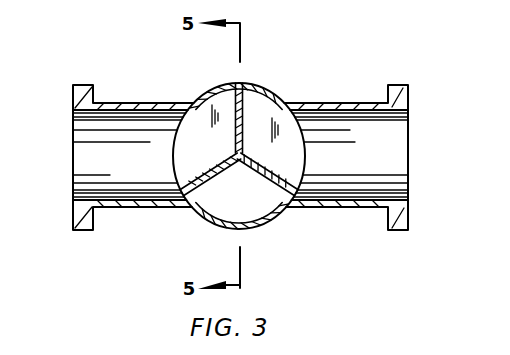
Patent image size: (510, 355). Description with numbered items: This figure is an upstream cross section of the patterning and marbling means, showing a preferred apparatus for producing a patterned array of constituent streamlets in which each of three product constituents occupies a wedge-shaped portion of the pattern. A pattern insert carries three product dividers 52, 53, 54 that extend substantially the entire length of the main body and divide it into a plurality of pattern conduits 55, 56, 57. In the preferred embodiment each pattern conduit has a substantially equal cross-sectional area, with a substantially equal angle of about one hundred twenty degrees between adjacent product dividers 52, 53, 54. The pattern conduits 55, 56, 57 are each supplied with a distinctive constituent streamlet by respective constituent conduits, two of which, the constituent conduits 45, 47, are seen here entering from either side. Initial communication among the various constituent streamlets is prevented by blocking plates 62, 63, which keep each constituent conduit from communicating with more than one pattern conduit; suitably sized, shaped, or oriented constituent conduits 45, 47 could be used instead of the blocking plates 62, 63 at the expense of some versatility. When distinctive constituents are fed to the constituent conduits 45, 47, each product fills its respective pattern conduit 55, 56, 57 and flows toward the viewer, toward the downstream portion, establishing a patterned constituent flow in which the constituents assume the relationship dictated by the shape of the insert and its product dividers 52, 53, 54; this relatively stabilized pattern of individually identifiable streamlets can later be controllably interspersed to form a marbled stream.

The constituent conduit 45 is at (400, 153).
The constituent conduit 47 is at (82, 155).
The product divider 52 is at (247, 95).
The product divider 53 is at (277, 168).
The product divider 54 is at (193, 181).
The pattern conduit 55 is at (298, 158).
The pattern conduit 56 is at (263, 224).
The pattern conduit 57 is at (182, 149).
The blocking plate 62 is at (285, 190).
The blocking plate 63 is at (196, 192).